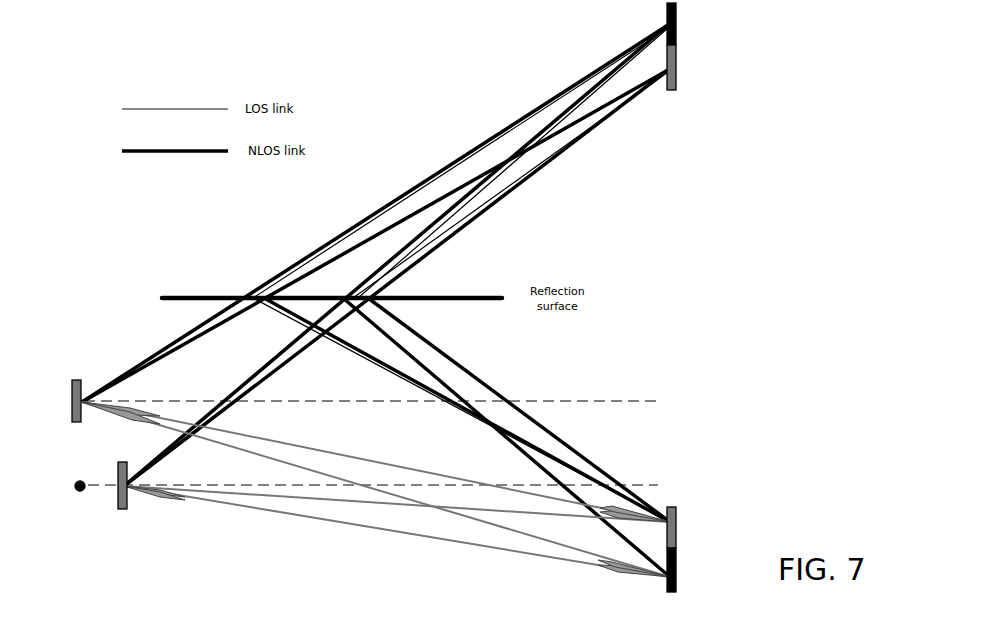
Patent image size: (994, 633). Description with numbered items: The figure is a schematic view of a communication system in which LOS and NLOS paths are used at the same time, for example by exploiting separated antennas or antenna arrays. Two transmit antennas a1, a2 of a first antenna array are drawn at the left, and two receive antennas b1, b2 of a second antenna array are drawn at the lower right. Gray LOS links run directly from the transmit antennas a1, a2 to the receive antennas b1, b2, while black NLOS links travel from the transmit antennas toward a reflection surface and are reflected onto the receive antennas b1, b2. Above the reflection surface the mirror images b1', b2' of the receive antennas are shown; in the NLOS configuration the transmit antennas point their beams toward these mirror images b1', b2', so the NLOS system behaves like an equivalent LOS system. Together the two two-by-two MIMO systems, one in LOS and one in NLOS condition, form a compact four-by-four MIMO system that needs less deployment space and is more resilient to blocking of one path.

The transmit antenna a1 is at (74, 488).
The transmit antenna a2 is at (51, 401).
The receive antenna b1 is at (696, 570).
The receive antenna b2 is at (696, 527).
The mirror image of receive antenna b1' is at (702, 24).
The mirror image of receive antenna b2' is at (702, 67).